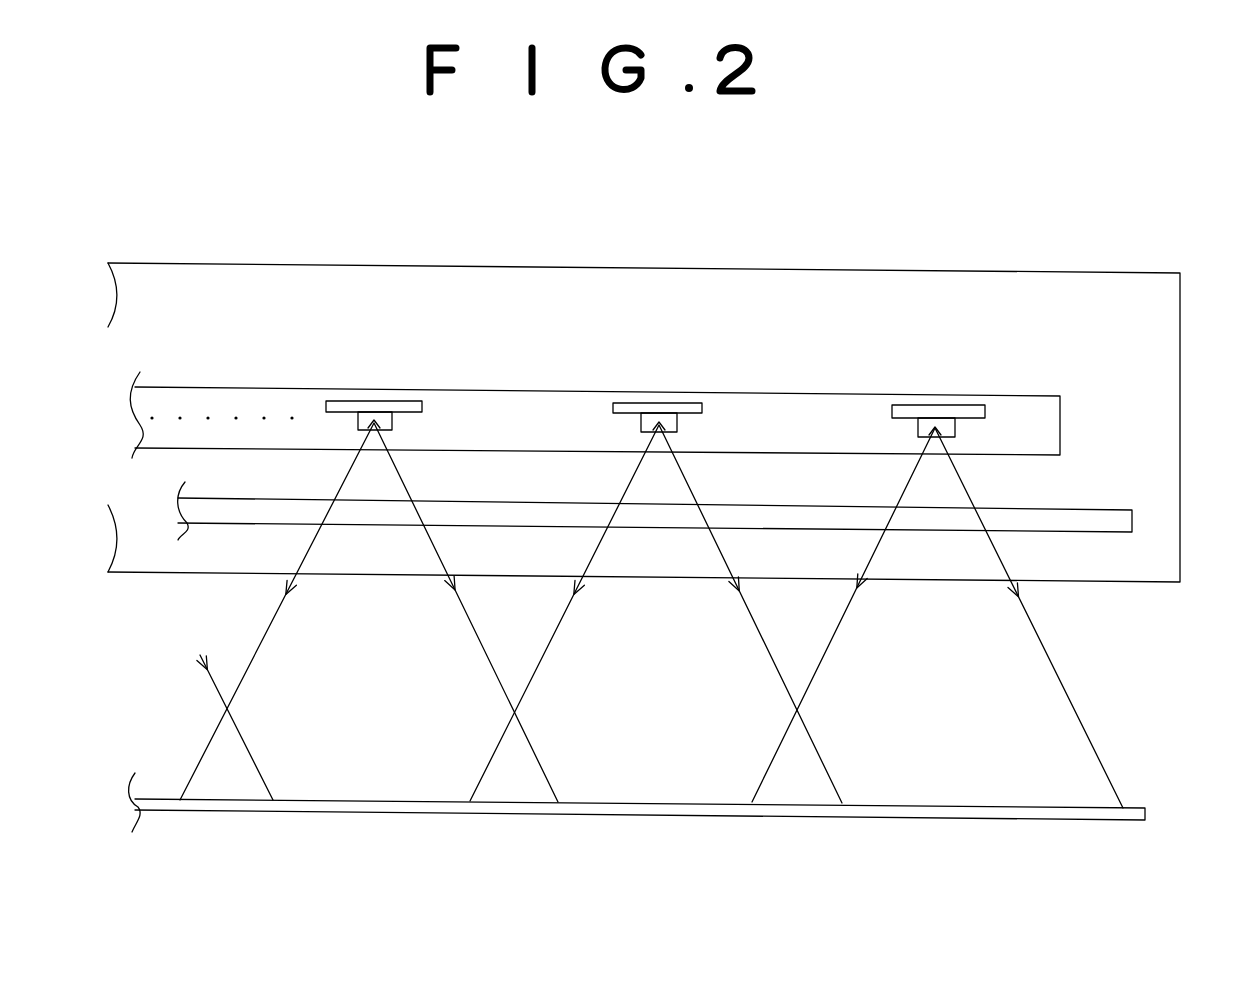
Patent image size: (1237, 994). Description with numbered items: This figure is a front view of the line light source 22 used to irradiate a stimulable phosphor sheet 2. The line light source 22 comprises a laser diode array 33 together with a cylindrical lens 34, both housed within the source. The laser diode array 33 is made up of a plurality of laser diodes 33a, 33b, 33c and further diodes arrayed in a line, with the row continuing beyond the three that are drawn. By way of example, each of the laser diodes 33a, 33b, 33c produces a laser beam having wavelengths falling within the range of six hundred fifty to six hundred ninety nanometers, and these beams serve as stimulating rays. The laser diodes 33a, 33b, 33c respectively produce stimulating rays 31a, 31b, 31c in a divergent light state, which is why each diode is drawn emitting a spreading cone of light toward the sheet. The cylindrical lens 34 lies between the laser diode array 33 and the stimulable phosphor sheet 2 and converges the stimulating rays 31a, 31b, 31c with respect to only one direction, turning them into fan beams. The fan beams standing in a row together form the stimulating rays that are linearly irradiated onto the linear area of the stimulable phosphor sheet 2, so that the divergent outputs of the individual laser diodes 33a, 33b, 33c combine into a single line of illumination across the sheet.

The stimulable phosphor sheet 2 is at (1148, 815).
The line light source 22 is at (877, 268).
The laser diode array 33 is at (777, 393).
The laser diode 33a is at (943, 401).
The laser diode 33b is at (650, 403).
The laser diode 33c is at (368, 392).
The cylindrical lens 34 is at (1088, 508).
The stimulating rays 31a is at (815, 677).
The stimulating rays 31b is at (530, 682).
The stimulating rays 31c is at (247, 668).